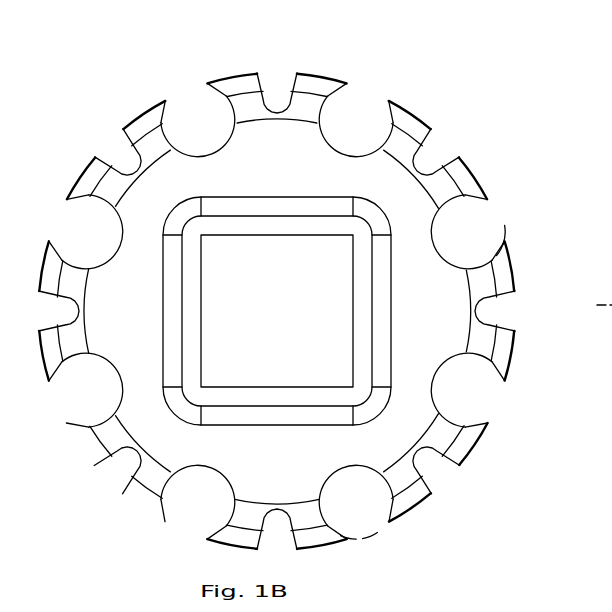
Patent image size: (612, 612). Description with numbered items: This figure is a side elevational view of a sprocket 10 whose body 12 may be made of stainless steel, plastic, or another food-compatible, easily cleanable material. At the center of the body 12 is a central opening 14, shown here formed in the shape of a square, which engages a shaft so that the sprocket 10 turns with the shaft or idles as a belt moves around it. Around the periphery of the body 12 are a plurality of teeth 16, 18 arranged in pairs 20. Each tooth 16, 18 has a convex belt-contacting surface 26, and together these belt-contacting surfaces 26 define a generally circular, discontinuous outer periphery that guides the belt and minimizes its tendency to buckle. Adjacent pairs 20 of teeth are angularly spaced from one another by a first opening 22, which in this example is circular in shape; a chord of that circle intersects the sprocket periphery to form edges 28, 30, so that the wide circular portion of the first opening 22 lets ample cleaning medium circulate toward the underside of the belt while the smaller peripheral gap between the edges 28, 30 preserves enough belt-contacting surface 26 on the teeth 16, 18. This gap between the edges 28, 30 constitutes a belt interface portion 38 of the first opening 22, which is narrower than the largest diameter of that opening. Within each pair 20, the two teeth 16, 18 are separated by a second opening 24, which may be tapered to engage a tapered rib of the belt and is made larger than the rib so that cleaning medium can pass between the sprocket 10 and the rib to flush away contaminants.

The sprocket 10 is at (79, 55).
The body 12 is at (270, 171).
The central opening 14 is at (266, 314).
The tooth 16 is at (228, 77).
The tooth 18 is at (328, 77).
The pair of teeth 20 is at (517, 352).
The first opening 22 is at (353, 116).
The second opening 24 is at (280, 80).
The belt-contacting surface 26 is at (145, 105).
The edge 28 is at (492, 203).
The edge 30 is at (506, 241).
The belt interface portion 38 is at (508, 229).